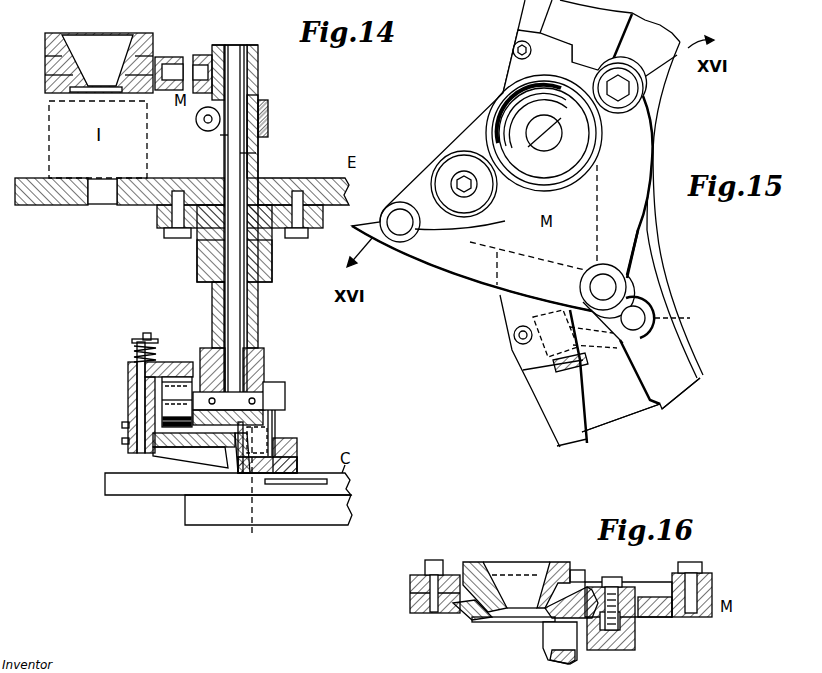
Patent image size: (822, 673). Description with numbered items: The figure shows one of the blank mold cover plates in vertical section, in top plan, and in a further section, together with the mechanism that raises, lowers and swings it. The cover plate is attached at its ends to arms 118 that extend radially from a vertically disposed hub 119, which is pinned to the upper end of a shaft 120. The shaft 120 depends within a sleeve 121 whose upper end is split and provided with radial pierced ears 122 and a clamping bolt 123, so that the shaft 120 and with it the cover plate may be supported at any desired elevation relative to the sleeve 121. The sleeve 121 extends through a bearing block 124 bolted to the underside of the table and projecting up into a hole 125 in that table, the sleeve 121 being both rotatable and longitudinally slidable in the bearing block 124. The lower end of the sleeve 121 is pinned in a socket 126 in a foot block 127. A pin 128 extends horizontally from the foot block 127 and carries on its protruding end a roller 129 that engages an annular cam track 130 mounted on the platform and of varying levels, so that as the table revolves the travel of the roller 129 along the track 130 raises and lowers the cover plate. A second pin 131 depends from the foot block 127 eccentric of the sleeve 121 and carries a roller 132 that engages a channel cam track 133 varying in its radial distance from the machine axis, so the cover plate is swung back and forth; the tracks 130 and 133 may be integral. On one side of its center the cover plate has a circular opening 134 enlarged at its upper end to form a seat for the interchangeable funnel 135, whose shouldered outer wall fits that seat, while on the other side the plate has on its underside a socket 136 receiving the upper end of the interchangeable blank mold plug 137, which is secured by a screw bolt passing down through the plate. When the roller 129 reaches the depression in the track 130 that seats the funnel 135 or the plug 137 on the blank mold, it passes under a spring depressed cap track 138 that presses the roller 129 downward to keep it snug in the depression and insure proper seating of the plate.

In FIG. 14, the arms 118 is at (197, 57).
In FIG. 15, the arms 118 is at (601, 223).
In FIG. 14, the hub 119 is at (258, 80).
In FIG. 15, the hub 119 is at (629, 279).
In FIG. 14, the shaft 120 is at (256, 148).
In FIG. 15, the shaft 120 is at (590, 286).
In FIG. 16, the shaft 120 is at (548, 640).
In FIG. 14, the sleeve 121 is at (256, 164).
In FIG. 14, the pierced ears 122 is at (208, 218).
In FIG. 14, the clamping bolt 123 is at (196, 120).
In FIG. 14, the bearing block 124 is at (205, 259).
In FIG. 14, the hole 125 is at (272, 178).
In FIG. 14, the socket 126 is at (265, 368).
In FIG. 14, the foot block 127 is at (276, 420).
In FIG. 15, the foot block 127 is at (597, 335).
In FIG. 14, the pin 128 is at (268, 397).
In FIG. 14, the roller 129 is at (178, 377).
In FIG. 15, the roller 129 is at (570, 366).
In FIG. 14, the annular cam track 130 is at (177, 434).
In FIG. 15, the annular cam track 130 is at (621, 416).
In FIG. 14, the second pin 131 is at (266, 529).
In FIG. 15, the second pin 131 is at (645, 372).
In FIG. 14, the roller 132 is at (276, 430).
In FIG. 15, the roller 132 is at (672, 317).
In FIG. 14, the channel cam track 133 is at (248, 468).
In FIG. 15, the channel cam track 133 is at (675, 389).
In FIG. 16, the circular opening 134 is at (467, 621).
In FIG. 14, the funnel 135 is at (99, 63).
In FIG. 15, the funnel 135 is at (544, 133).
In FIG. 16, the funnel 135 is at (512, 560).
In FIG. 16, the socket 136 is at (635, 620).
In FIG. 15, the blank mold plug 137 is at (463, 170).
In FIG. 16, the blank mold plug 137 is at (635, 642).
In FIG. 14, the spring depressed cap track 138 is at (128, 380).
In FIG. 15, the spring depressed cap track 138 is at (516, 308).